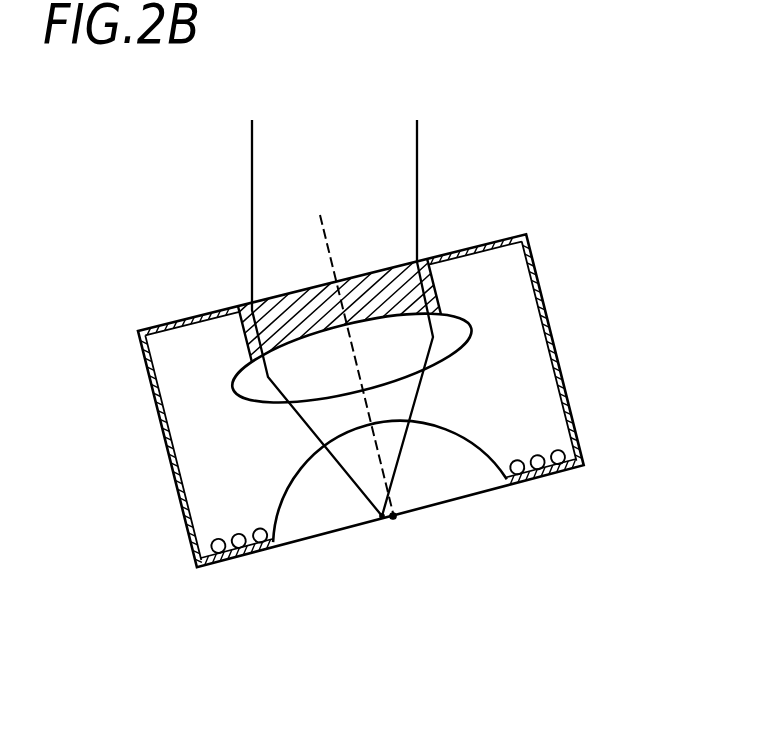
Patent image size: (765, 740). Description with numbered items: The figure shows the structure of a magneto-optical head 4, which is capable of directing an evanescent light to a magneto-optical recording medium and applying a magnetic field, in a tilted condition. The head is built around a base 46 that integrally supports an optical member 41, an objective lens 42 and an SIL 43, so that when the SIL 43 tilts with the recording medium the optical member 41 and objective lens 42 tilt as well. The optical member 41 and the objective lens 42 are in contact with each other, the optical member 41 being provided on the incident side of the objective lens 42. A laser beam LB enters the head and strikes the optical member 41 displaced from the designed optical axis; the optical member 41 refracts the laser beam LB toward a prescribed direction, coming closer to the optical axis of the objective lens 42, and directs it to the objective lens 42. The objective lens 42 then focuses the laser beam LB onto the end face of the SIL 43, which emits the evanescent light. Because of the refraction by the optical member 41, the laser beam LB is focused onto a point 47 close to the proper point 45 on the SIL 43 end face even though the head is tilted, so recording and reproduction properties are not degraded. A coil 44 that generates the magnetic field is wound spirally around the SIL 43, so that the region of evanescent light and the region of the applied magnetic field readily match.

The magneto-optical head 4 is at (550, 186).
The optical member 41 is at (267, 308).
The objective lens 42 is at (453, 335).
The SIL 43 is at (458, 480).
The coil 44 is at (238, 545).
The point 45 is at (394, 517).
The base 46 is at (537, 268).
The point 47 is at (382, 520).
The laser beam LB is at (273, 183).